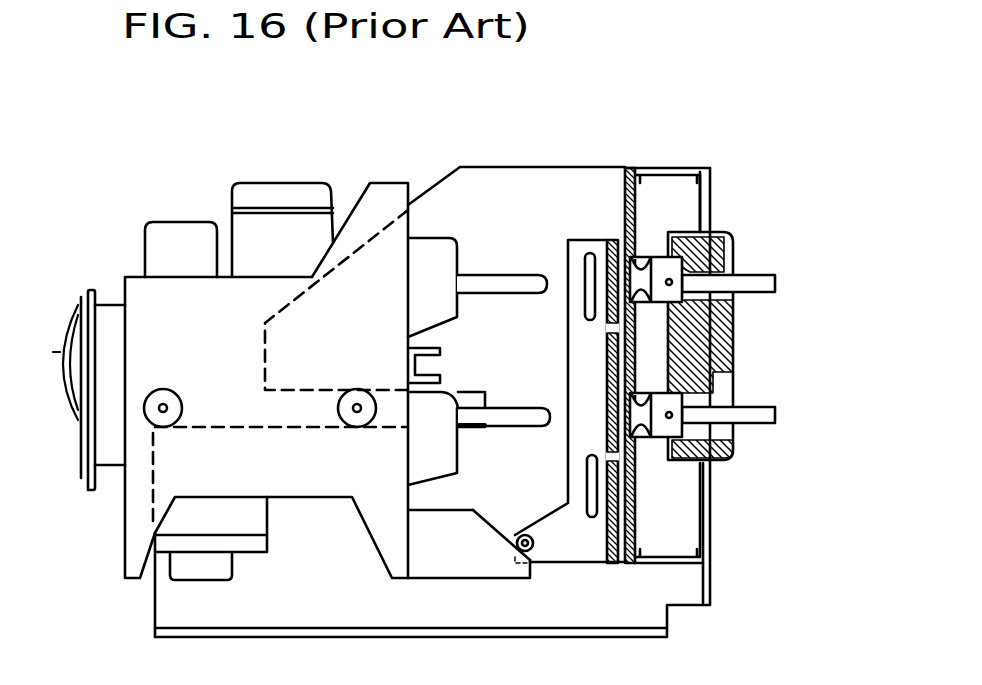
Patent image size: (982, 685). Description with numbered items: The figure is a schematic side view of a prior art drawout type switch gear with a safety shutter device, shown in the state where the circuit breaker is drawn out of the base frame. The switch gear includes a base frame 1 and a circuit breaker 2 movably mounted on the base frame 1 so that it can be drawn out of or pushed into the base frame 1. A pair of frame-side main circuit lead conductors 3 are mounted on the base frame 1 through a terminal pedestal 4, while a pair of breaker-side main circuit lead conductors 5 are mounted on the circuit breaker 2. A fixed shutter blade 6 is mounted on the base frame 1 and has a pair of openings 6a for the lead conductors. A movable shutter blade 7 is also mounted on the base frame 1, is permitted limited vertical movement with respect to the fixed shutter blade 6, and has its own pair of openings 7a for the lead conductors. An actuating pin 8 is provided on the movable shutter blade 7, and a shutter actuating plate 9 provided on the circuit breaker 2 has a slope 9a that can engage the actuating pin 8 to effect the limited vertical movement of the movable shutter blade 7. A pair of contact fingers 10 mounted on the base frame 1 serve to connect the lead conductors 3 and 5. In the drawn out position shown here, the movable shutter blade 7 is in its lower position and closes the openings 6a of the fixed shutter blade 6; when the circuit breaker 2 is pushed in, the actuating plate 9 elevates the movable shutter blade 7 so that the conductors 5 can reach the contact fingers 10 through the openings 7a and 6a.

The base frame 1 is at (478, 183).
The circuit breaker 2 is at (140, 295).
The frame-side main circuit lead conductors 3 is at (763, 280).
The terminal pedestal 4 is at (718, 232).
The breaker-side main circuit lead conductors 5 is at (488, 283).
The fixed shutter blade 6 is at (628, 167).
The openings 6a is at (633, 253).
The movable shutter blade 7 is at (610, 238).
The openings 7a is at (607, 335).
The actuating pin 8 is at (533, 560).
The shutter actuating plate 9 is at (428, 560).
The slope 9a is at (497, 518).
The contact fingers 10 is at (731, 348).